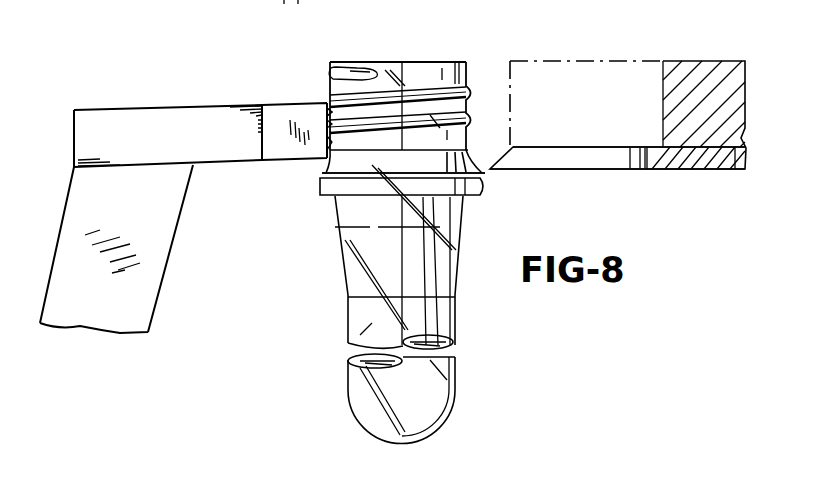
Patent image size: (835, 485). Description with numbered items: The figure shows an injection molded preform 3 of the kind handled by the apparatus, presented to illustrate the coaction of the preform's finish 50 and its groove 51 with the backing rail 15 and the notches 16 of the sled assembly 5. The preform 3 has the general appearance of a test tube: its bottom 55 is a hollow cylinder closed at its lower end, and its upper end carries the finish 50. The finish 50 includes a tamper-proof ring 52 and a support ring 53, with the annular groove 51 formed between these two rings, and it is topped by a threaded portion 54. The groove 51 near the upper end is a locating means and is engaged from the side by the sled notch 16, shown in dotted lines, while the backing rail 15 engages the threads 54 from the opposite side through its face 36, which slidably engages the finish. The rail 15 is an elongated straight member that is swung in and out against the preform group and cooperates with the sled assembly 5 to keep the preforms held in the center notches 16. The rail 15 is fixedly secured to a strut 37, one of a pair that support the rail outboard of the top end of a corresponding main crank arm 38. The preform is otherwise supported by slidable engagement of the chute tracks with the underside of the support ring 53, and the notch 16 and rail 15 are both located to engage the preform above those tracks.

The preform 3 is at (393, 48).
The sled assembly 5 is at (676, 50).
The backing rail 15 is at (270, 110).
The center notch 16 is at (617, 158).
The face 36 is at (332, 91).
The strut 37 is at (163, 117).
The main crank arm 38 is at (143, 317).
The finish 50 is at (476, 53).
The groove 51 is at (473, 183).
The tamper-proof ring 52 is at (480, 133).
The support ring 53 is at (345, 194).
The threaded portion 54 is at (420, 95).
The bottom 55 is at (357, 375).